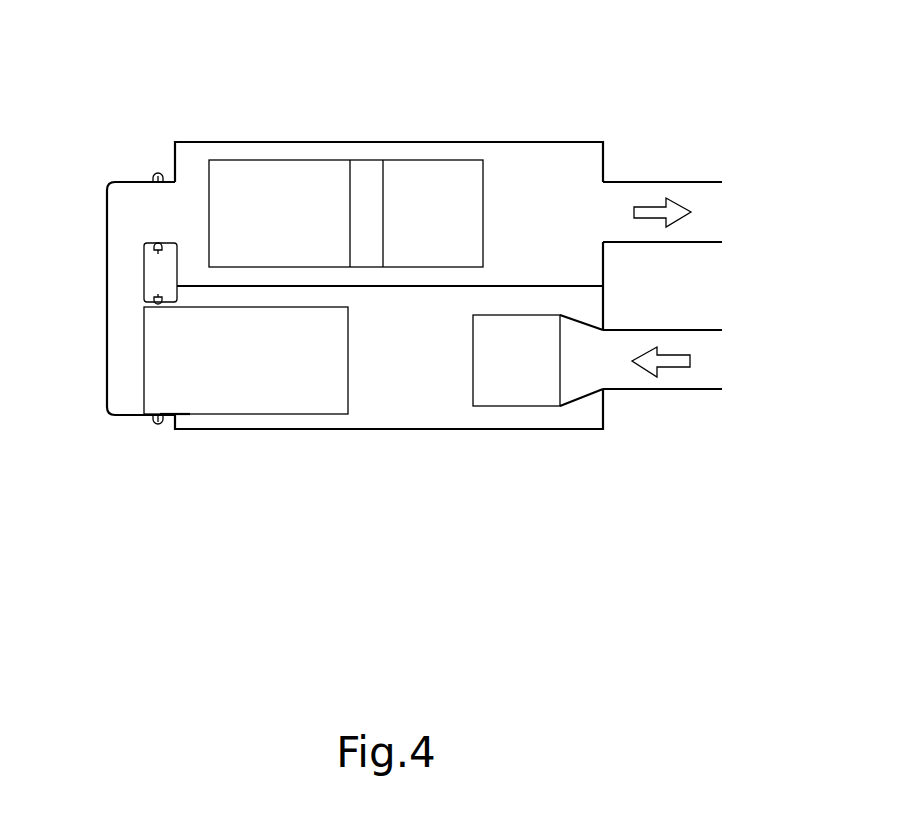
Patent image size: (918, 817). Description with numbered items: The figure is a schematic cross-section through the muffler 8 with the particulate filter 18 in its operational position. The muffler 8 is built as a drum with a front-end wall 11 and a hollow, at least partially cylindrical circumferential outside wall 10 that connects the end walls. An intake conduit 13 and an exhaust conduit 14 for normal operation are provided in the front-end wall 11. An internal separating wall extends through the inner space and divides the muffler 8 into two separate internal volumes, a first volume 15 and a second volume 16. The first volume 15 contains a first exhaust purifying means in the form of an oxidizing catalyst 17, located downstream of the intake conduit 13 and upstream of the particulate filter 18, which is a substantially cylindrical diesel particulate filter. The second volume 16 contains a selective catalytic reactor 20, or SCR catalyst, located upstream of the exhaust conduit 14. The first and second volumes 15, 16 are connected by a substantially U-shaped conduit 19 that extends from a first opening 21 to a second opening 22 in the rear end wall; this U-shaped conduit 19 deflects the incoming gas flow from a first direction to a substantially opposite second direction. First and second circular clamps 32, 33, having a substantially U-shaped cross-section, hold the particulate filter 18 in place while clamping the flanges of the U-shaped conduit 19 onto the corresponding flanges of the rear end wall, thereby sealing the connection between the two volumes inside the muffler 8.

The muffler 8 is at (116, 97).
The circumferential outside wall 10 is at (489, 142).
The front-end wall 11 is at (603, 158).
The intake conduit 13 is at (718, 362).
The exhaust conduit 14 is at (718, 212).
The first volume 15 is at (387, 372).
The second volume 16 is at (525, 223).
The oxidizing catalyst 17 is at (499, 380).
The particulate filter 18 is at (233, 373).
The U-shaped conduit 19 is at (107, 288).
The selective catalytic reactor 20 is at (400, 232).
The first opening 21 is at (169, 414).
The second opening 22 is at (167, 187).
The first circular clamp 32 is at (155, 430).
The second circular clamp 33 is at (158, 174).